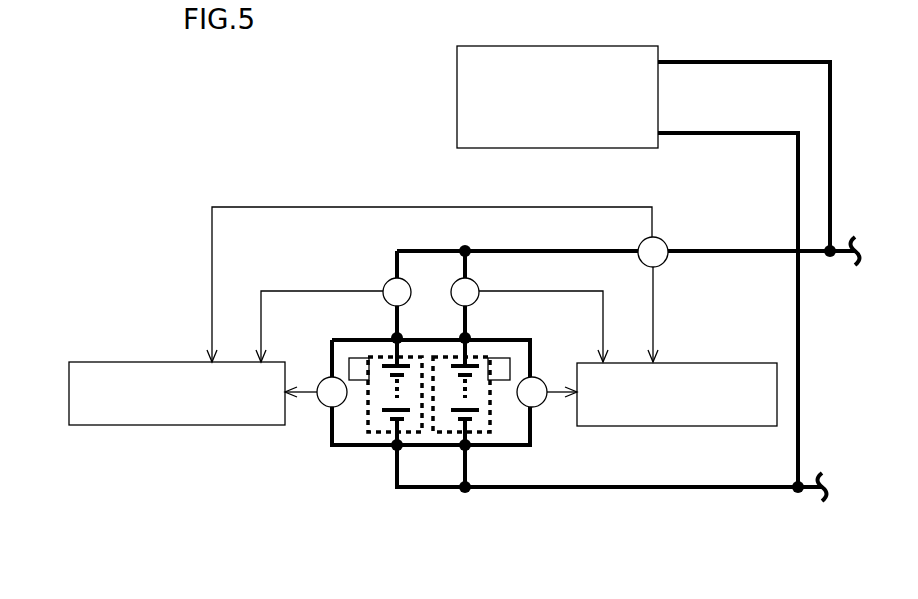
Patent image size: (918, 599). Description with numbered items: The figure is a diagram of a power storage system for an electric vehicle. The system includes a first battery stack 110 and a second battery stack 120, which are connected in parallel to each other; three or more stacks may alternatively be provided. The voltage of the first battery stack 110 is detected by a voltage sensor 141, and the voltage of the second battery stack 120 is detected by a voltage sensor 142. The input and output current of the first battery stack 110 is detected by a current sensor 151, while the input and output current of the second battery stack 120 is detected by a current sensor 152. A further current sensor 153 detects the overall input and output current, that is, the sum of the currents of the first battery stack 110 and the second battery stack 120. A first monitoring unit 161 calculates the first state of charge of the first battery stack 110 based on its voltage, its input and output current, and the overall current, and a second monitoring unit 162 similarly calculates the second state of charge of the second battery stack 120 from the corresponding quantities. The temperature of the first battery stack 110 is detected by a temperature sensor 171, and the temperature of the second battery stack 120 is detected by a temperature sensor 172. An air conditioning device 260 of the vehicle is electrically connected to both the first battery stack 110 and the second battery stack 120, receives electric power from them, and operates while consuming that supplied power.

The air conditioning device 260 is at (457, 97).
The current sensor 152 is at (410, 284).
The current sensor 151 is at (478, 285).
The current sensor 153 is at (645, 241).
The temperature sensor 172 is at (353, 358).
The temperature sensor 171 is at (500, 358).
The second battery stack 120 is at (373, 433).
The first battery stack 110 is at (480, 431).
The voltage sensor 142 is at (323, 407).
The voltage sensor 141 is at (536, 407).
The second monitoring unit 162 is at (158, 427).
The first monitoring unit 161 is at (687, 430).